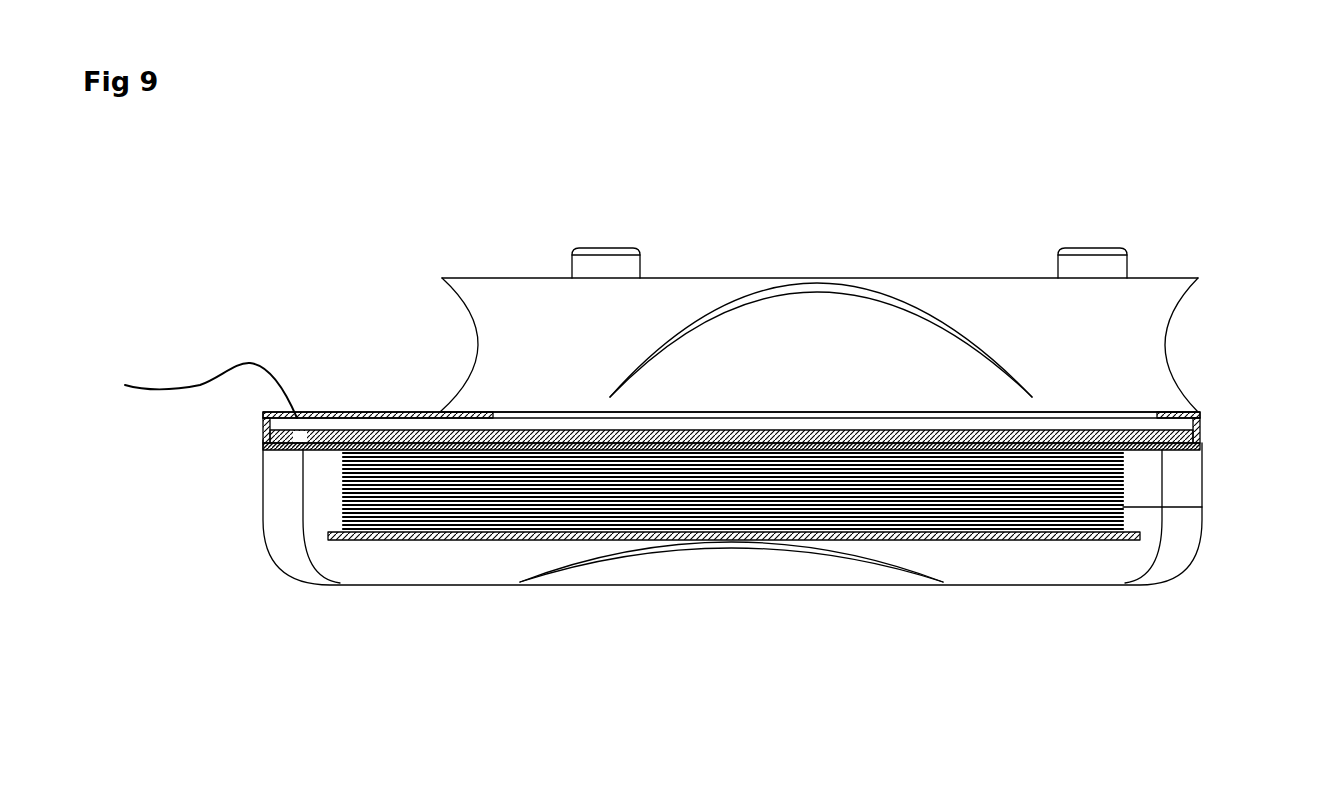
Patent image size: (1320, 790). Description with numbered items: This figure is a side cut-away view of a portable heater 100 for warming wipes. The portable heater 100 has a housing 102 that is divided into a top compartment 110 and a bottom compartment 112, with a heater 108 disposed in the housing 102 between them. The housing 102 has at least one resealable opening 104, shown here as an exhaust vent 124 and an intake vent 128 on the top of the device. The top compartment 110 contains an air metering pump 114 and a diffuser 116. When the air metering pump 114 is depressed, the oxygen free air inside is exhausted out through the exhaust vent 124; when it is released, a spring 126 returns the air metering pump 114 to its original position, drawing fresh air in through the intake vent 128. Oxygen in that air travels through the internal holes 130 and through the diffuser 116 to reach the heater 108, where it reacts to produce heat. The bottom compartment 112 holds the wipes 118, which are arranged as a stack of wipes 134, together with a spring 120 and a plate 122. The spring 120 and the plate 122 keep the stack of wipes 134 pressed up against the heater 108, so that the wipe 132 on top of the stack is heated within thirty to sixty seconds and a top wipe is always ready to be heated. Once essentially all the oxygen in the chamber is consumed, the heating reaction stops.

The portable heater 100 is at (1198, 232).
The housing 102 is at (1202, 470).
The opening 104 is at (603, 260).
The heater 108 is at (343, 455).
The top compartment 110 is at (1183, 308).
The bottom compartment 112 is at (1162, 582).
The air metering pump 114 is at (492, 333).
The diffuser 116 is at (410, 433).
The wipes 118 is at (343, 497).
The spring 120 is at (552, 572).
The plate 122 is at (330, 540).
The exhaust vent 124 is at (608, 255).
The spring 126 is at (710, 308).
The intake vent 128 is at (1092, 263).
The internal holes 130 is at (597, 430).
The wipe 132 is at (117, 376).
The stack of wipes 134 is at (1075, 490).